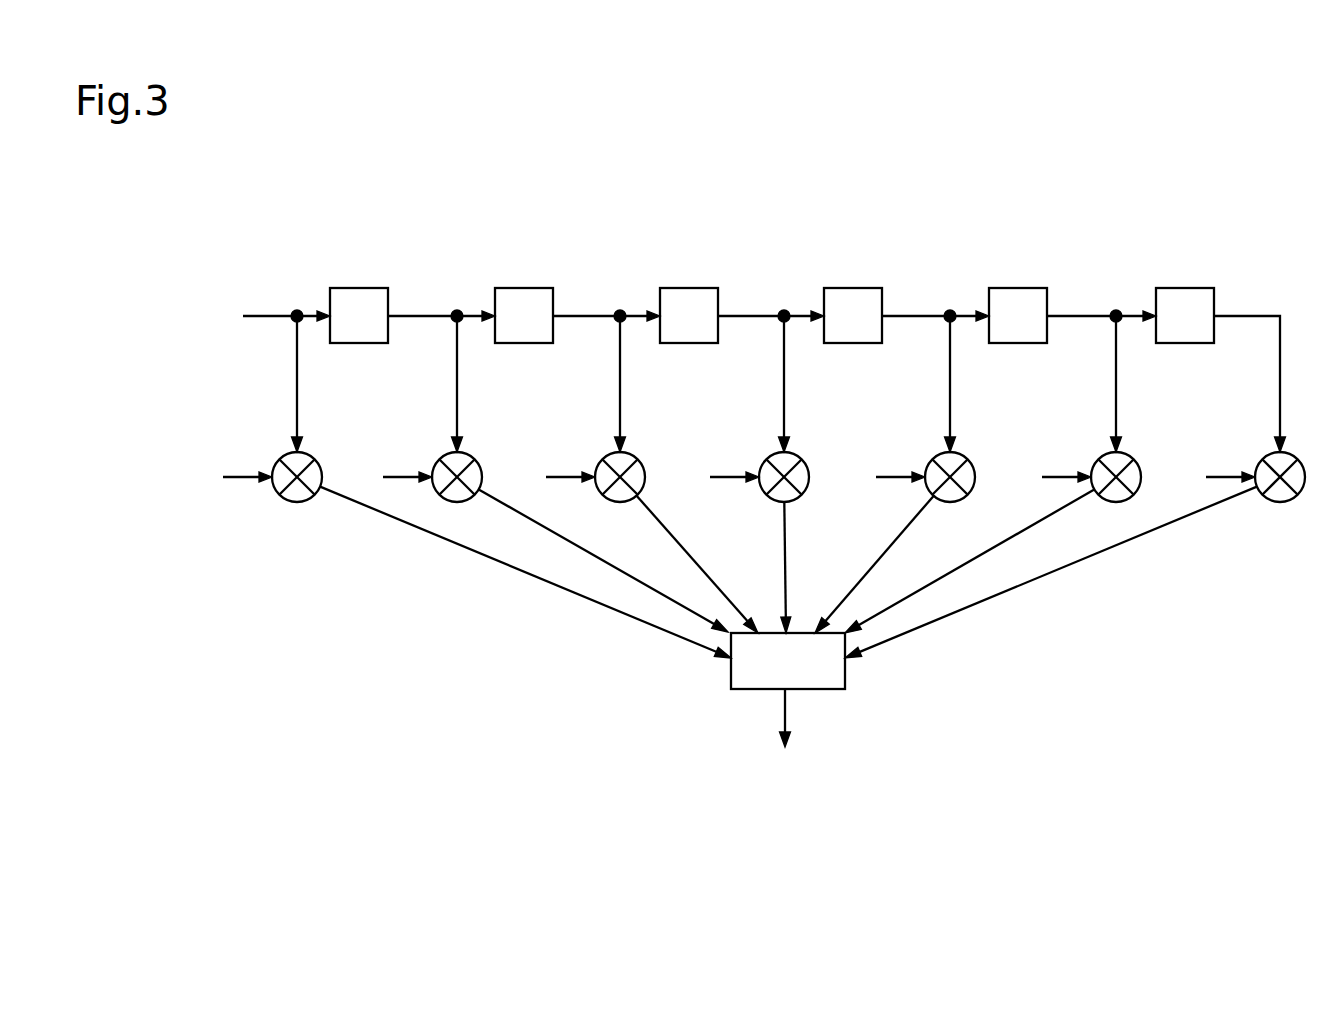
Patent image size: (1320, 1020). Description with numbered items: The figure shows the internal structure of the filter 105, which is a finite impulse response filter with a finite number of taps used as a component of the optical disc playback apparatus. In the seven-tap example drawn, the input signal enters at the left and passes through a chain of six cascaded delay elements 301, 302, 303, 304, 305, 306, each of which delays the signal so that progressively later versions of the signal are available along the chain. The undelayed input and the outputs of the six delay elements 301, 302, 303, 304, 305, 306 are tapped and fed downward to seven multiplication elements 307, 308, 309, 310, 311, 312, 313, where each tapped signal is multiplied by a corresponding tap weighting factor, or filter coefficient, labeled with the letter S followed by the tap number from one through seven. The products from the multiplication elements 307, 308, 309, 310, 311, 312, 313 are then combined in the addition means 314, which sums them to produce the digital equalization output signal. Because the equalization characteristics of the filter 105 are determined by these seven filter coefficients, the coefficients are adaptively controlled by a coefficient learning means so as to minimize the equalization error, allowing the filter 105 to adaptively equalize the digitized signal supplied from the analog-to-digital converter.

The filter 105 is at (432, 647).
The delay element 301 is at (356, 288).
The delay element 302 is at (521, 288).
The delay element 303 is at (686, 288).
The delay element 304 is at (850, 288).
The delay element 305 is at (1015, 288).
The delay element 306 is at (1182, 288).
The multiplication element 307 is at (280, 453).
The multiplication element 308 is at (440, 453).
The multiplication element 309 is at (603, 453).
The multiplication element 310 is at (767, 453).
The multiplication element 311 is at (933, 453).
The multiplication element 312 is at (1099, 453).
The multiplication element 313 is at (1263, 453).
The addition means 314 is at (742, 688).